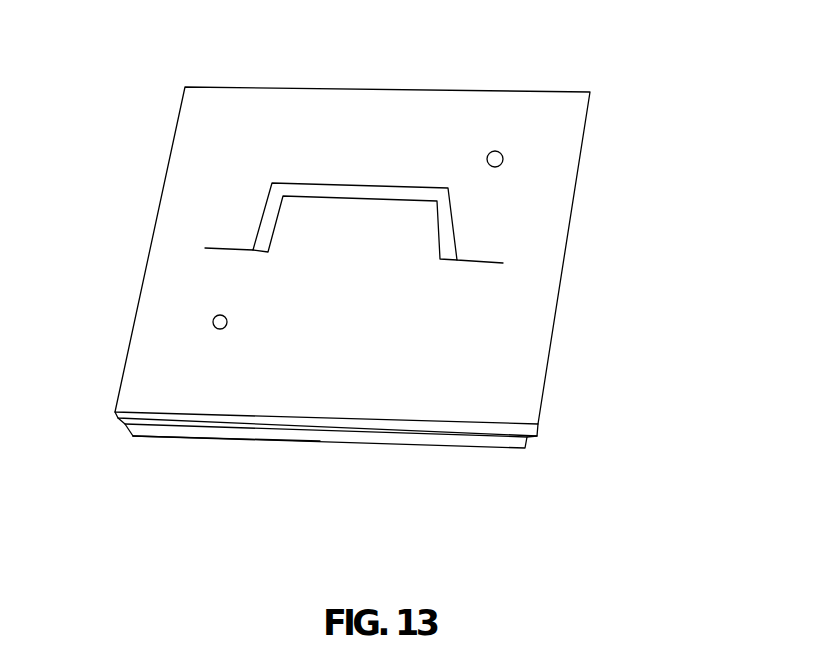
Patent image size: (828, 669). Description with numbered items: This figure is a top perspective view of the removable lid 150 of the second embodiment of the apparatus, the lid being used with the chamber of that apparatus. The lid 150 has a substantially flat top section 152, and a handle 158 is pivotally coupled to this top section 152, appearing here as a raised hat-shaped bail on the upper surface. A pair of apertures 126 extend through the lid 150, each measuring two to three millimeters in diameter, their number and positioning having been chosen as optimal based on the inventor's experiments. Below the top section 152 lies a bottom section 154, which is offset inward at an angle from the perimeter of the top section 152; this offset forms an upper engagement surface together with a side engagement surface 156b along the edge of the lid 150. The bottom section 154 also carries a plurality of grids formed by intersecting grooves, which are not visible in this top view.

The lid 150 is at (603, 66).
The top section 152 is at (530, 323).
The bottom section 154 is at (497, 442).
The side engagement surface 156b is at (150, 438).
The handle 158 is at (385, 183).
The apertures 126 is at (213, 320).